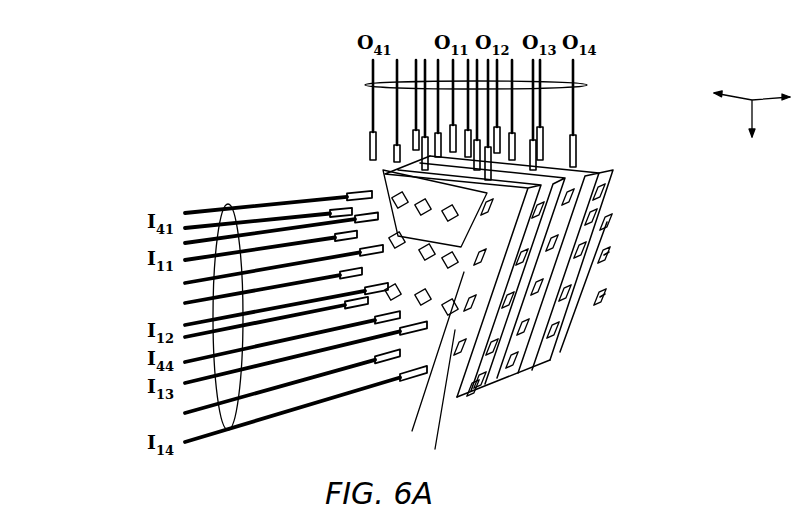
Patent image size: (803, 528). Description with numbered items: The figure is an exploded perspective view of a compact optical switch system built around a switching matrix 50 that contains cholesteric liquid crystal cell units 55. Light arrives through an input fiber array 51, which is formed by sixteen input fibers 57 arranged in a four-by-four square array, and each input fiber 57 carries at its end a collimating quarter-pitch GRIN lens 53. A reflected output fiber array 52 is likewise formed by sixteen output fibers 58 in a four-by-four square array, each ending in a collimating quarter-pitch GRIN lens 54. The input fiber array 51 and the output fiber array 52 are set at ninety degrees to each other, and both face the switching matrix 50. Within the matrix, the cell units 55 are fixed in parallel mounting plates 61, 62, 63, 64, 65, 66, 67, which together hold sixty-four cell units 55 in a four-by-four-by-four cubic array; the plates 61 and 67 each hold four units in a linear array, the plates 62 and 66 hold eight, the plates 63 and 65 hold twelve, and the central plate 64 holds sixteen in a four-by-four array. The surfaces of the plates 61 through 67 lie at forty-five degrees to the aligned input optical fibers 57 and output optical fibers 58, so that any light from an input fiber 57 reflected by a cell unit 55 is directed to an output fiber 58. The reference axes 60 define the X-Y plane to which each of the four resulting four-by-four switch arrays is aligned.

The switching matrix 50 is at (548, 368).
The input fiber array 51 is at (247, 187).
The reflected output fiber array 52 is at (310, 117).
The collimating quarter-pitch GRIN lens 53 is at (350, 205).
The collimating quarter-pitch GRIN lens 54 is at (362, 112).
The cholesteric liquid crystal cell unit 55 is at (400, 200).
The input fiber 57 is at (229, 204).
The output fiber 58 is at (368, 84).
The reference axes 60 is at (762, 82).
The mounting plate 61 is at (383, 165).
The mounting plate 62 is at (435, 449).
The mounting plate 63 is at (412, 431).
The mounting plate 64 is at (600, 177).
The mounting plate 65 is at (606, 210).
The mounting plate 66 is at (606, 252).
The mounting plate 67 is at (602, 295).